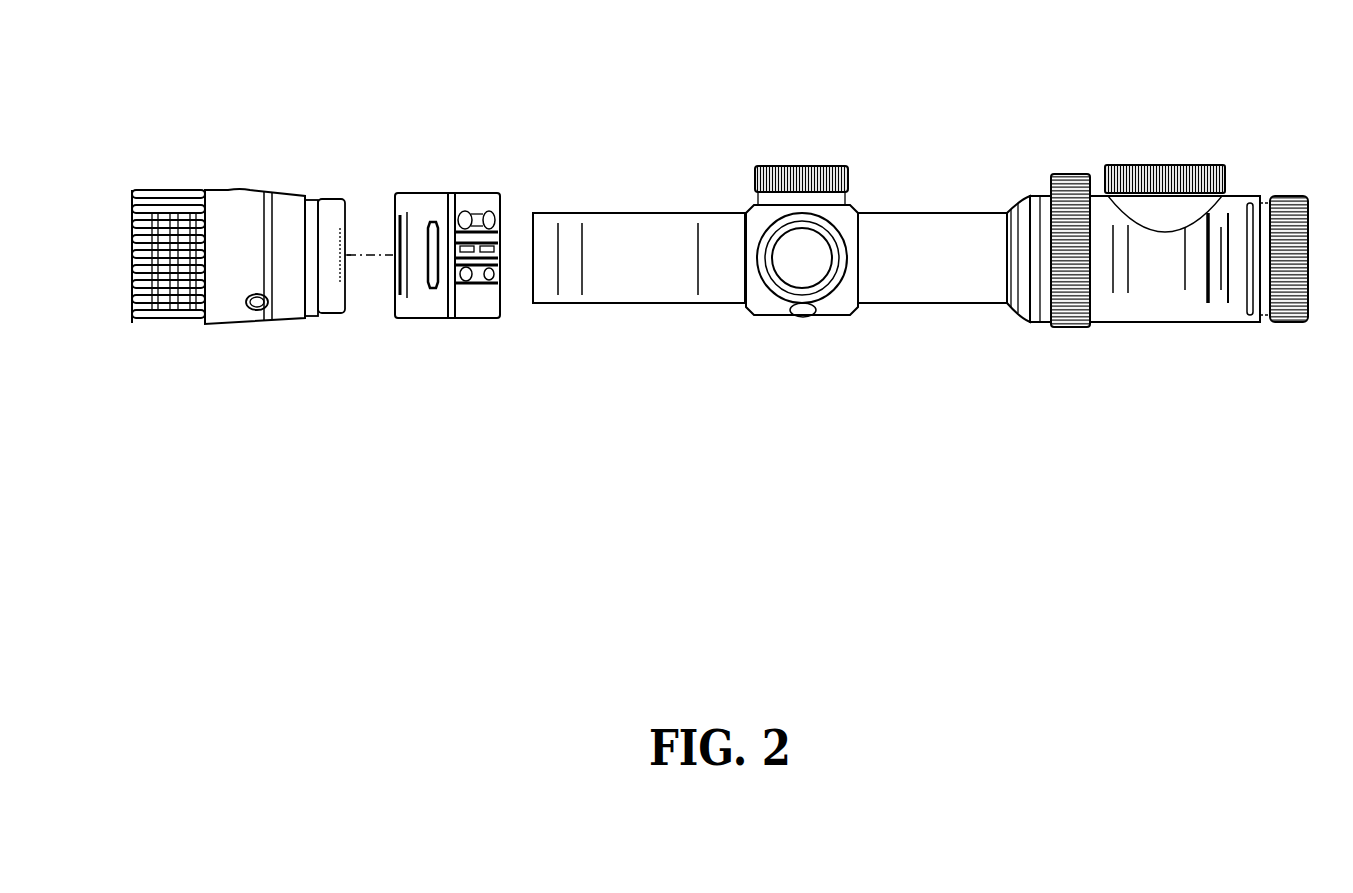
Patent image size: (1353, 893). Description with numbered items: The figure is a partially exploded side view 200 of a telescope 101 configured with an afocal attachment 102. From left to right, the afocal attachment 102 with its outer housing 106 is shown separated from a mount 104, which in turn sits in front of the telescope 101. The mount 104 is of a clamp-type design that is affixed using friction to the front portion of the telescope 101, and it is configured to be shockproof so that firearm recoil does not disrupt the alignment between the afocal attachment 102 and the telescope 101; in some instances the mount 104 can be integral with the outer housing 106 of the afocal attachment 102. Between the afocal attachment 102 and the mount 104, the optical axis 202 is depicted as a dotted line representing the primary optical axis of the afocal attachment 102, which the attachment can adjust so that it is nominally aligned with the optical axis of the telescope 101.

The telescope 101 is at (907, 113).
The afocal attachment 102 is at (128, 178).
The mount 104 is at (451, 176).
The outer housing 106 is at (234, 345).
The partially exploded side view 200 is at (1024, 585).
The optical axis 202 is at (373, 272).